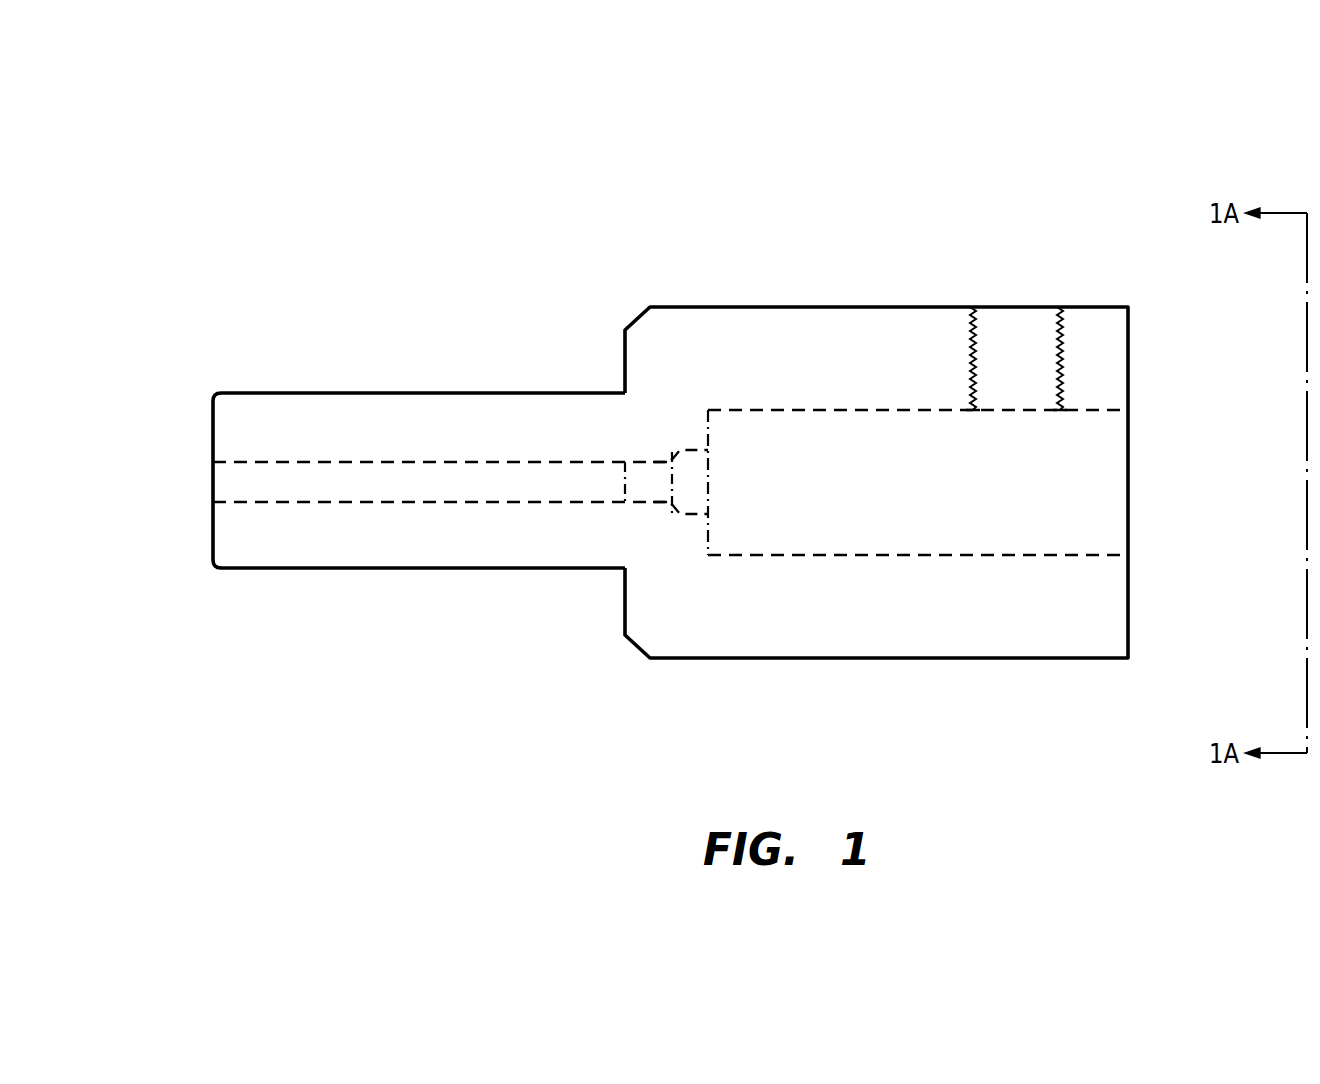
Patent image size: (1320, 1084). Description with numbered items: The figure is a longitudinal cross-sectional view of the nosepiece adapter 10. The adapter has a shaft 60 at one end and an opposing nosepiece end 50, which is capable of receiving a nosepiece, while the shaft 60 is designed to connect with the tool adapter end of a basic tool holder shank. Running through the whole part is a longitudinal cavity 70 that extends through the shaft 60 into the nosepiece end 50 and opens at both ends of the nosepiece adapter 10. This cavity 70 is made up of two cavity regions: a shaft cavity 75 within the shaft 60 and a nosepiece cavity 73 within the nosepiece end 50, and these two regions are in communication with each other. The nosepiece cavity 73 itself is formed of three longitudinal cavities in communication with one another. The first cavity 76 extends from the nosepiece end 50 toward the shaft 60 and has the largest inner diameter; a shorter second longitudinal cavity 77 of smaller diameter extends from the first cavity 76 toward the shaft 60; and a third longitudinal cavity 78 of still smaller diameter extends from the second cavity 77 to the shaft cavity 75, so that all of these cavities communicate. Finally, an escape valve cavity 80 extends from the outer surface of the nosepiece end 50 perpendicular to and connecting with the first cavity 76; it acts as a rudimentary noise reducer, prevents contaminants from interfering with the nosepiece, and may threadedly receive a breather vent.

The nosepiece adapter 10 is at (99, 236).
The nosepiece end 50 is at (1129, 356).
The shaft 60 is at (311, 563).
The longitudinal cavity 70 is at (473, 199).
The nosepiece cavity 73 is at (765, 264).
The shaft cavity 75 is at (488, 480).
The first cavity 76 is at (867, 485).
The second longitudinal cavity 77 is at (690, 485).
The third longitudinal cavity 78 is at (653, 477).
The escape valve cavity 80 is at (1015, 318).